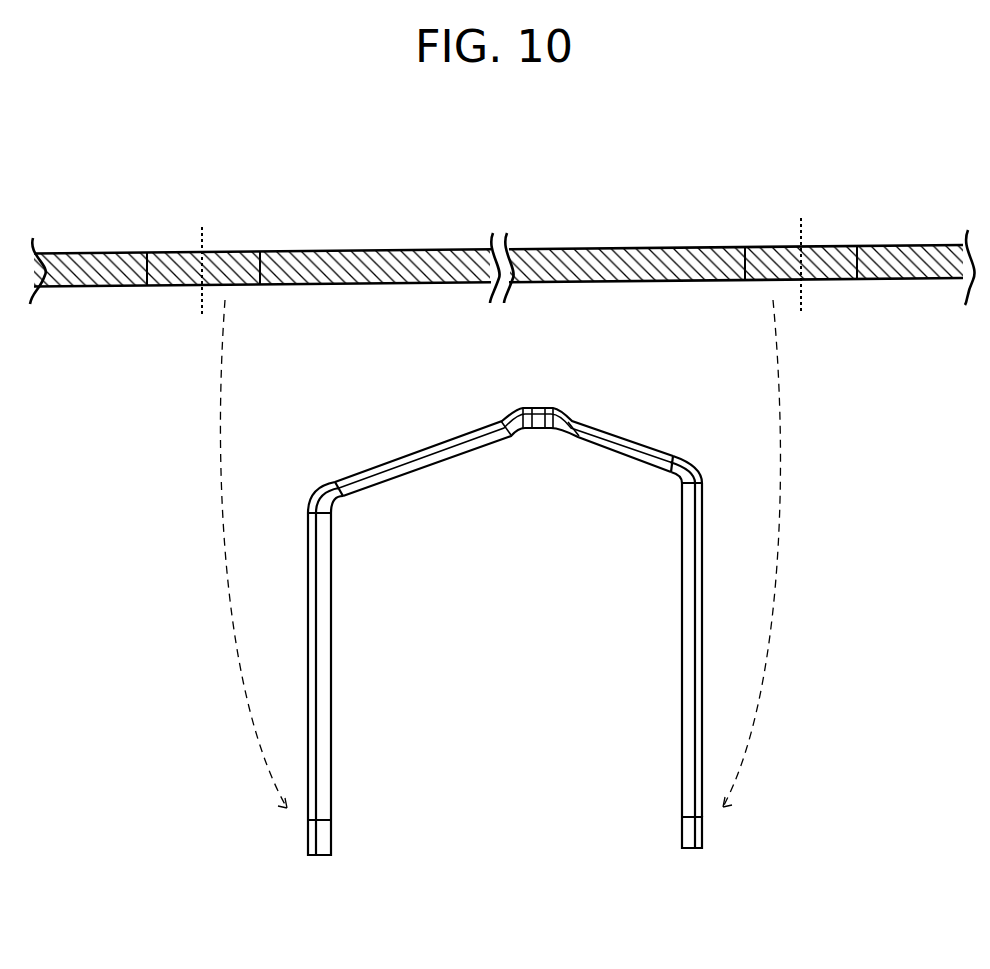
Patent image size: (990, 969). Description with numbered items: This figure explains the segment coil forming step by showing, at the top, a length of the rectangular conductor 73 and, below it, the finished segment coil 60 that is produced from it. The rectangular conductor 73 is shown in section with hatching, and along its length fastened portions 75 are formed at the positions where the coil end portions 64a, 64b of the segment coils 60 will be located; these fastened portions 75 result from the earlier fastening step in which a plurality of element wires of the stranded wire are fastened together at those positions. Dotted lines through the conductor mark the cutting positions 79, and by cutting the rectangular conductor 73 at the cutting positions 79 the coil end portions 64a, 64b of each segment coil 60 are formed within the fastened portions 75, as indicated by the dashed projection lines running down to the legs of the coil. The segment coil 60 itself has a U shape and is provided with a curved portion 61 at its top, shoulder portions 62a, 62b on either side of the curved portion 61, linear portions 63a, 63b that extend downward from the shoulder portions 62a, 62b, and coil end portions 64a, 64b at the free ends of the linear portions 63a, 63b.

The segment coil 60 is at (505, 589).
The curved portion 61 is at (443, 416).
The shoulder portion 62a is at (326, 493).
The shoulder portion 62b is at (684, 465).
The linear portion 63a is at (323, 617).
The linear portion 63b is at (693, 618).
The coil end portion 64a is at (322, 835).
The coil end portion 64b is at (688, 835).
The rectangular conductor 73 is at (502, 217).
The fastened portion 75 is at (172, 252).
The cutting position 79 is at (202, 302).